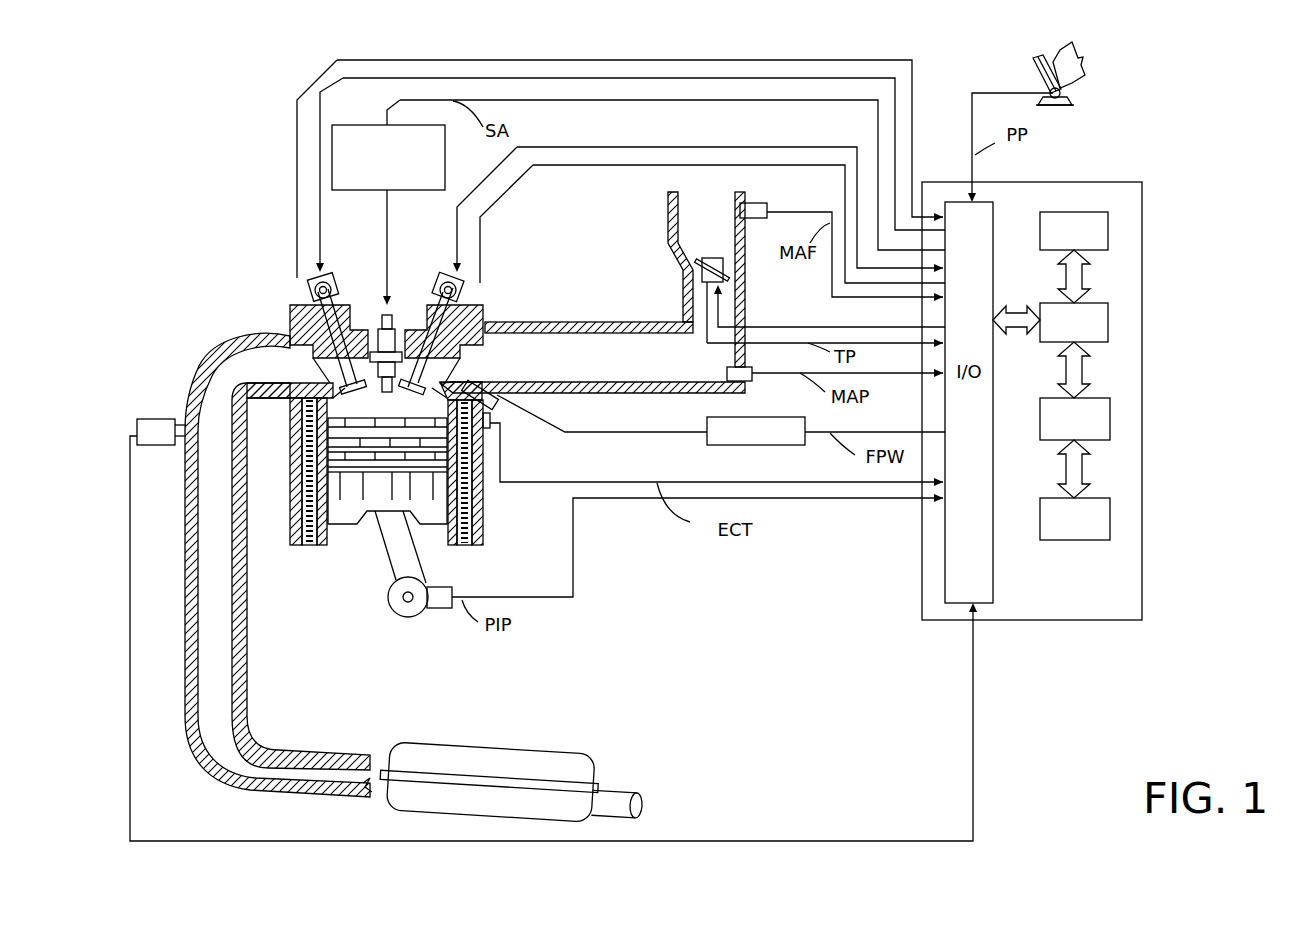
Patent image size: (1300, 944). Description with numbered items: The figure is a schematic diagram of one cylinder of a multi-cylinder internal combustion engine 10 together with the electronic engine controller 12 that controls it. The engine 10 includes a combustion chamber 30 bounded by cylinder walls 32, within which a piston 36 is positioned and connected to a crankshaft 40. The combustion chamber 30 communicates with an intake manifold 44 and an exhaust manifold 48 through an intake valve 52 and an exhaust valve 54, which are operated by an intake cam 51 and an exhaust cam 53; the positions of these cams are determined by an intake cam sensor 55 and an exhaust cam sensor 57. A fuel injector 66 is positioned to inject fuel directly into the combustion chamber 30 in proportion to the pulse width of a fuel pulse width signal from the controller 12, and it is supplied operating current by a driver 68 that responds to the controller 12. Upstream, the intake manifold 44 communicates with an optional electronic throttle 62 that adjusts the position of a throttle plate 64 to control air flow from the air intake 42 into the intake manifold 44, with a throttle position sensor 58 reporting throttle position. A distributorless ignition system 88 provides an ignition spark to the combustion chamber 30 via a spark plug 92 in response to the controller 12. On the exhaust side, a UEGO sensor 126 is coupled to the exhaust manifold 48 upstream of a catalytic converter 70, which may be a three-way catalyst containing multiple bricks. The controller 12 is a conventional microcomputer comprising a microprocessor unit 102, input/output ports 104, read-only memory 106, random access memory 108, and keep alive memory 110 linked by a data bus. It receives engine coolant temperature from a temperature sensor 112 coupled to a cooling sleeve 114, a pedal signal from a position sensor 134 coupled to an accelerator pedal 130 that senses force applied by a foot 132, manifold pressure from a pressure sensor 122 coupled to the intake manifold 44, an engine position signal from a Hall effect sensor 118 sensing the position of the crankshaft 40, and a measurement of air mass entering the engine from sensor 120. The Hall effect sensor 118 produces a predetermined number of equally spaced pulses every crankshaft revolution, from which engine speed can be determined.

The internal combustion engine 10 is at (225, 261).
The electronic engine controller 12 is at (1130, 182).
The combustion chamber 30 is at (385, 402).
The cylinder walls 32 is at (331, 540).
The piston 36 is at (372, 500).
The crankshaft 40 is at (394, 612).
The air intake 42 is at (700, 235).
The intake manifold 44 is at (636, 372).
The exhaust manifold 48 is at (248, 374).
The intake cam 51 is at (443, 275).
The intake valve 52 is at (440, 364).
The exhaust cam 53 is at (333, 275).
The exhaust valve 54 is at (290, 340).
The intake cam sensor 55 is at (466, 292).
The exhaust cam sensor 57 is at (305, 292).
The throttle position sensor 58 is at (693, 285).
The electronic throttle 62 is at (725, 265).
The throttle plate 64 is at (700, 265).
The fuel injector 66 is at (490, 404).
The driver 68 is at (720, 446).
The catalytic converter 70 is at (400, 748).
The distributorless ignition system 88 is at (345, 125).
The spark plug 92 is at (391, 306).
The microprocessor unit 102 is at (1110, 312).
The input/output ports 104 is at (997, 208).
The read-only memory 106 is at (1110, 230).
The random access memory 108 is at (1112, 418).
The keep alive memory 110 is at (1112, 518).
The temperature sensor 112 is at (497, 432).
The cooling sleeve 114 is at (485, 503).
The Hall effect sensor 118 is at (433, 609).
The air mass sensor 120 is at (757, 203).
The pressure sensor 122 is at (750, 381).
The UEGO sensor 126 is at (137, 422).
The accelerator pedal 130 is at (1036, 68).
The foot 132 is at (1085, 58).
The position sensor 134 is at (1062, 93).